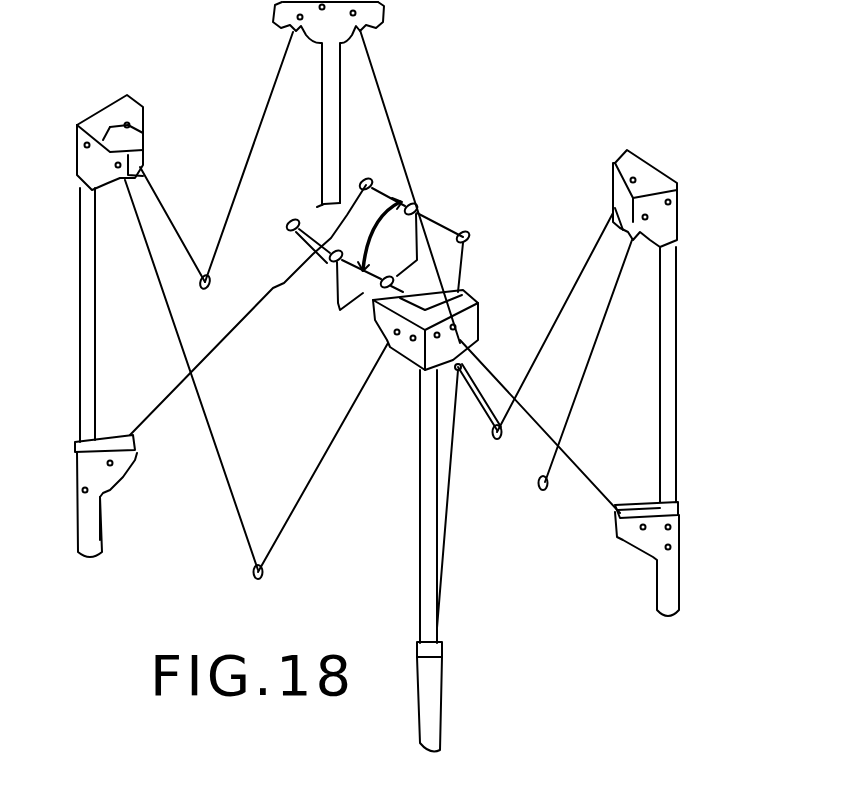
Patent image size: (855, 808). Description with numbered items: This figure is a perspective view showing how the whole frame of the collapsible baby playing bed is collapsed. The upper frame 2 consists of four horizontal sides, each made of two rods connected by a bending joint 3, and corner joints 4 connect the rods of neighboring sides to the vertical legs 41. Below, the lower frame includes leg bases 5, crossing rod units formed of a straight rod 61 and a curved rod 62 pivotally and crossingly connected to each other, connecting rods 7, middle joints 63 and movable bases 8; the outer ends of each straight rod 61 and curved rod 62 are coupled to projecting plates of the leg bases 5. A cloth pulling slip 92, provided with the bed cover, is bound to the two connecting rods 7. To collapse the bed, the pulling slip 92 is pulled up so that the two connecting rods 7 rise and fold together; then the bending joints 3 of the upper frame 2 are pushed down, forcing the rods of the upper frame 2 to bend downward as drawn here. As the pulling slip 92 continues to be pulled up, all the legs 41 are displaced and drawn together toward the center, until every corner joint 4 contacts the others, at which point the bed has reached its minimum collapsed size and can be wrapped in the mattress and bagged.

The upper frame 2 is at (375, 72).
The bending joint 3 is at (250, 571).
The corner joint 4 is at (668, 220).
The leg base 5 is at (670, 567).
The connecting rod 7 is at (378, 182).
The movable base 8 is at (332, 308).
The vertical leg 41 is at (668, 373).
The straight rod 61 is at (450, 520).
The curved rod 62 is at (590, 477).
The middle joint 63 is at (470, 237).
The cloth pulling slip 92 is at (381, 186).